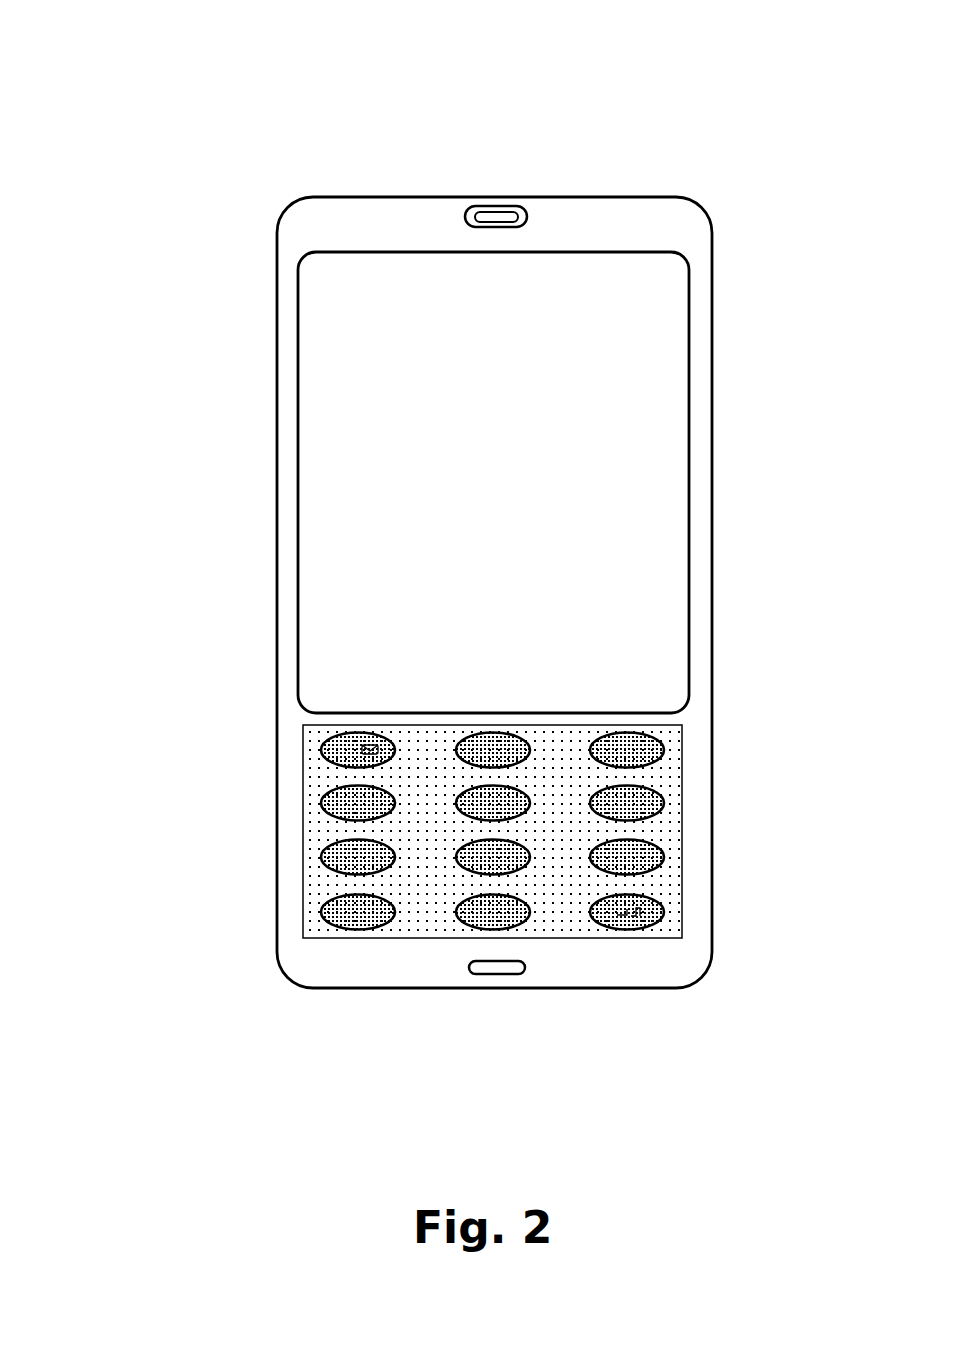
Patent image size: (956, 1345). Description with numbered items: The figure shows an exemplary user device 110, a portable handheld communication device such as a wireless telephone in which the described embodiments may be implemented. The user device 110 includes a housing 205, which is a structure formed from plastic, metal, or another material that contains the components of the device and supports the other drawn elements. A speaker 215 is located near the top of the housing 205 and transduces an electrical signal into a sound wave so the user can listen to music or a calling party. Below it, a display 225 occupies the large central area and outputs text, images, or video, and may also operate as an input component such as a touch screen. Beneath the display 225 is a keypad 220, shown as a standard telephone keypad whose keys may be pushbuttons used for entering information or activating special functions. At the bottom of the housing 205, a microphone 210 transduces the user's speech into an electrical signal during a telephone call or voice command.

The user device 110 is at (212, 77).
The housing 205 is at (277, 542).
The microphone 210 is at (513, 974).
The speaker 215 is at (507, 207).
The keypad 220 is at (722, 730).
The display 225 is at (673, 471).